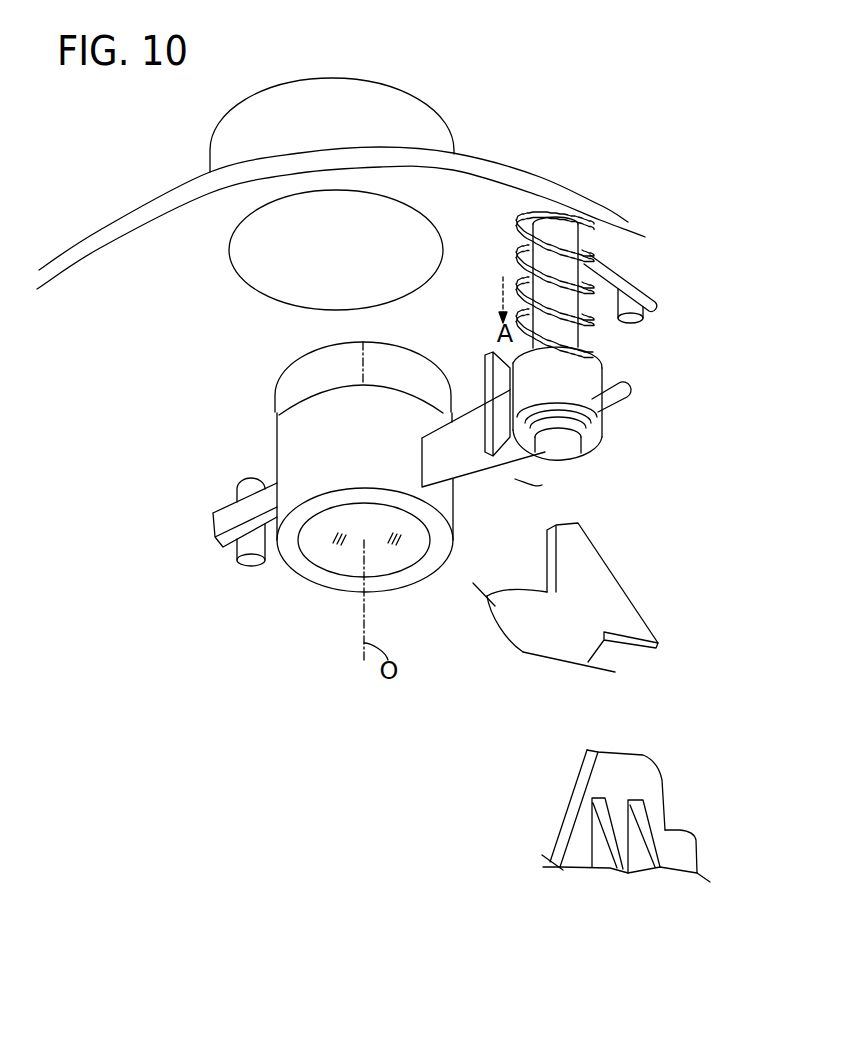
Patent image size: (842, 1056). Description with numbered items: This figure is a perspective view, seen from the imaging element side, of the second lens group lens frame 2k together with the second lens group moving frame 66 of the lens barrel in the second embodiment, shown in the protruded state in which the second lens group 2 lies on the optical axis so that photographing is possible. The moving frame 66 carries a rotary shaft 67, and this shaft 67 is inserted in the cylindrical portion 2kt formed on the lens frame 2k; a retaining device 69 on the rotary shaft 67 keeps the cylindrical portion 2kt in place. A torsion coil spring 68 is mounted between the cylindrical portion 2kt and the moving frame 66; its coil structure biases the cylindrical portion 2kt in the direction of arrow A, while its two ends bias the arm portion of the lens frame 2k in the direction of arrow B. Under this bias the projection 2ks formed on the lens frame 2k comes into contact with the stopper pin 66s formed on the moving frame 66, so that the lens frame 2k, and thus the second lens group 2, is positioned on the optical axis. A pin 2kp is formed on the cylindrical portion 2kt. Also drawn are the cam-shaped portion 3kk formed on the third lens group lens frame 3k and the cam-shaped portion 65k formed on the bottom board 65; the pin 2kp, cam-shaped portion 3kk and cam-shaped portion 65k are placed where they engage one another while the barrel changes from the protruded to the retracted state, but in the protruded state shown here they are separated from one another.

The second lens group moving frame 66 is at (475, 188).
The rotary shaft 67 is at (530, 268).
The torsion coil spring 68 is at (611, 256).
The second lens group lens frame 2k is at (418, 572).
The second lens group 2 is at (330, 557).
The cylindrical portion 2kt is at (590, 373).
The pin 2kp is at (631, 400).
The retaining device 69 is at (603, 440).
The projection 2ks is at (208, 537).
The stopper pin 66s is at (252, 566).
The third lens group lens frame 3k is at (584, 617).
The cam-shaped portion 3kk is at (606, 565).
The bottom board 65 is at (634, 835).
The cam-shaped portion 65k is at (666, 797).